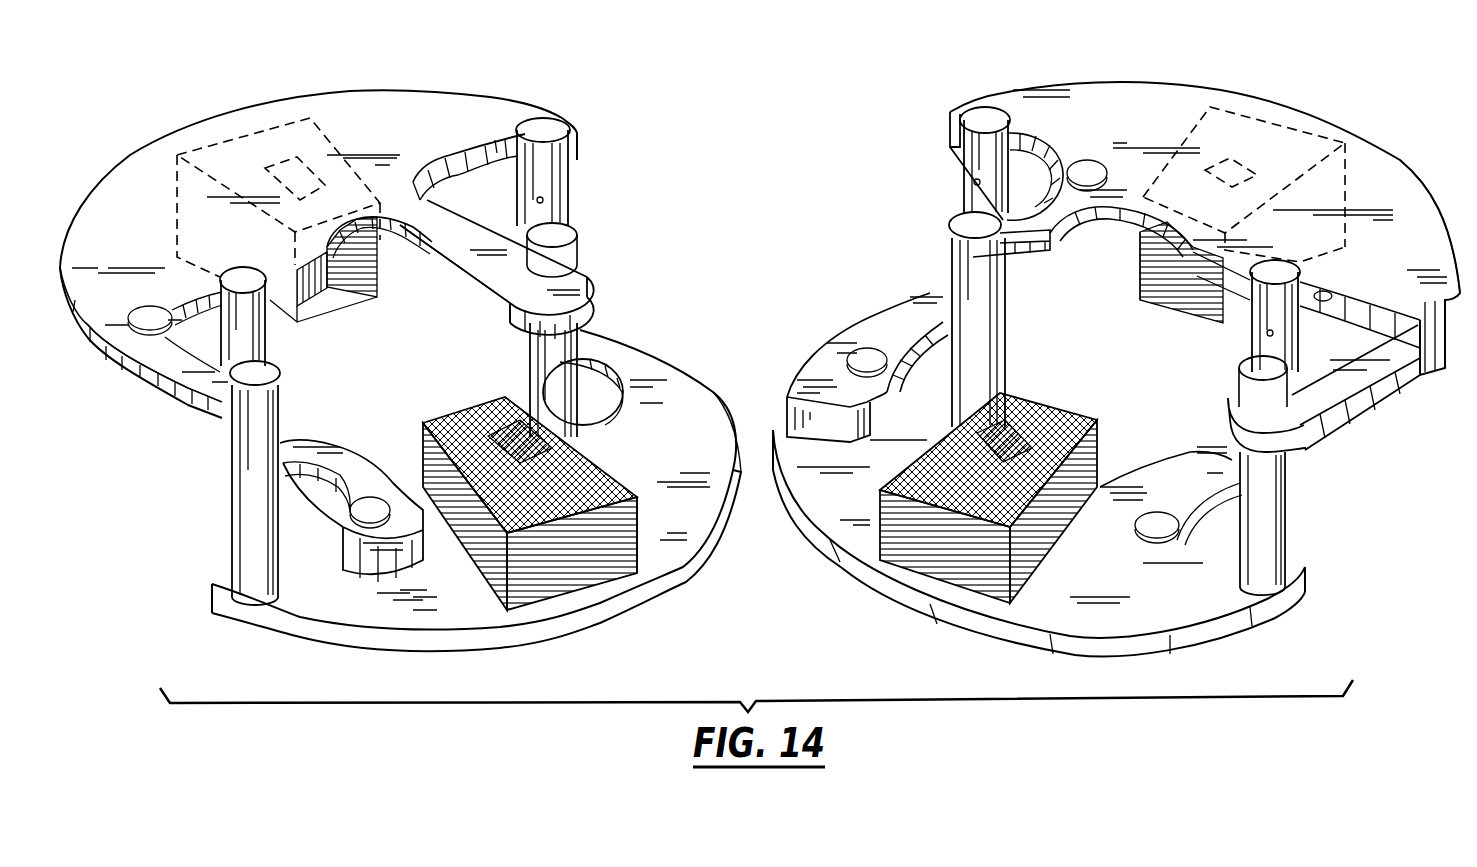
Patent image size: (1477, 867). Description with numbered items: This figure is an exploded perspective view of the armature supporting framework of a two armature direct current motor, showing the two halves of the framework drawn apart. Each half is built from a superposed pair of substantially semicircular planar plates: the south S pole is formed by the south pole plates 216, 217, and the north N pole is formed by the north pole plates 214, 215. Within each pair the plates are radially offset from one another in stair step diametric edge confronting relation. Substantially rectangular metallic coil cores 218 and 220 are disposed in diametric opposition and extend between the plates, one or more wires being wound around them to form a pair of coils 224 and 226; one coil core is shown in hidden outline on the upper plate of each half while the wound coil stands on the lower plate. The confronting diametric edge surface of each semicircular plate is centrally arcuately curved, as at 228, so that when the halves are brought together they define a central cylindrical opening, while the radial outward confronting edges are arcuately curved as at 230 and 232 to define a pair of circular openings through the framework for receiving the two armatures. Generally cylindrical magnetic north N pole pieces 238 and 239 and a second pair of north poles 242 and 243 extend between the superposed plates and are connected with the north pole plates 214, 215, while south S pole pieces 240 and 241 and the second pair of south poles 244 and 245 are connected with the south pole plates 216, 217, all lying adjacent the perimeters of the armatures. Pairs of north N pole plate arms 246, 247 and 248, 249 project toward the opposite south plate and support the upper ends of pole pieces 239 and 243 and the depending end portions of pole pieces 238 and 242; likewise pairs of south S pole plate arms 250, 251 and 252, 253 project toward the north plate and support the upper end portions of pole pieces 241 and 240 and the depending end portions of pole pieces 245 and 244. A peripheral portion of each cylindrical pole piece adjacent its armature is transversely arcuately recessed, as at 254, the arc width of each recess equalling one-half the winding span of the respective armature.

The north pole plate 214 is at (1140, 76).
The north pole plate 215 is at (1116, 561).
The south pole plate 216 is at (368, 81).
The south pole plate 217 is at (498, 651).
The coil core 218 is at (330, 137).
The coil core 220 is at (512, 400).
The coil 224 is at (497, 300).
The coil 226 is at (639, 476).
The arcuately curved edge 228 is at (370, 210).
The arcuately curved edge 230 is at (503, 143).
The arcuately curved edge 232 is at (168, 291).
The north pole piece 238 is at (1285, 262).
The north pole piece 239 is at (1285, 523).
The south pole piece 240 is at (577, 248).
The south pole piece 241 is at (232, 515).
The north pole piece 242 is at (972, 108).
The north pole piece 243 is at (960, 262).
The south pole piece 244 is at (568, 173).
The south pole piece 245 is at (270, 335).
The north pole plate arm 246 is at (1397, 390).
The north pole plate arm 247 is at (1043, 252).
The north pole plate arm 248 is at (1190, 457).
The north pole plate arm 249 is at (840, 332).
The south pole plate arm 250 is at (167, 393).
The south pole plate arm 251 is at (481, 323).
The south pole plate arm 252 is at (330, 445).
The south pole plate arm 253 is at (600, 333).
The arcuate recess 254 is at (537, 201).
The south pole S is at (237, 101).
The north pole N is at (1206, 76).